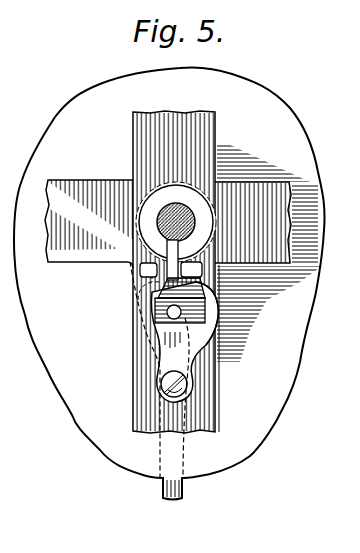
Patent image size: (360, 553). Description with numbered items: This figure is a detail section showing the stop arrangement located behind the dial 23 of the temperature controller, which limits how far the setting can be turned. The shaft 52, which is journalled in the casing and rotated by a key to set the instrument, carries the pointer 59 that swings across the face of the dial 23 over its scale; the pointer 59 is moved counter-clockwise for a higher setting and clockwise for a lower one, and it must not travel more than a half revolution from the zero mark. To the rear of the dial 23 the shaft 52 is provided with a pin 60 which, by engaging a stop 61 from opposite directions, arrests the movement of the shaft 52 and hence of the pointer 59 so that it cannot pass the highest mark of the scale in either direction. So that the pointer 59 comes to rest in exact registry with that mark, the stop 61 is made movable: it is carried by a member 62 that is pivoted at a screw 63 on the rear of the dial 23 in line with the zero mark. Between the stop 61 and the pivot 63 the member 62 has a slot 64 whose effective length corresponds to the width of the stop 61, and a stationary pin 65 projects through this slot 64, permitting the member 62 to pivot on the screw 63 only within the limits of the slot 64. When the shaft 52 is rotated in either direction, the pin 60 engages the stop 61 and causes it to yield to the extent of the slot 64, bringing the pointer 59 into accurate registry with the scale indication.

The dial 23 is at (256, 423).
The shaft 52 is at (161, 214).
The pointer 59 is at (160, 458).
The pin 60 is at (157, 268).
The stop 61 is at (201, 277).
The member 62 is at (165, 357).
The pivot screw 63 is at (163, 392).
The slot 64 is at (205, 322).
The stationary pin 65 is at (167, 311).